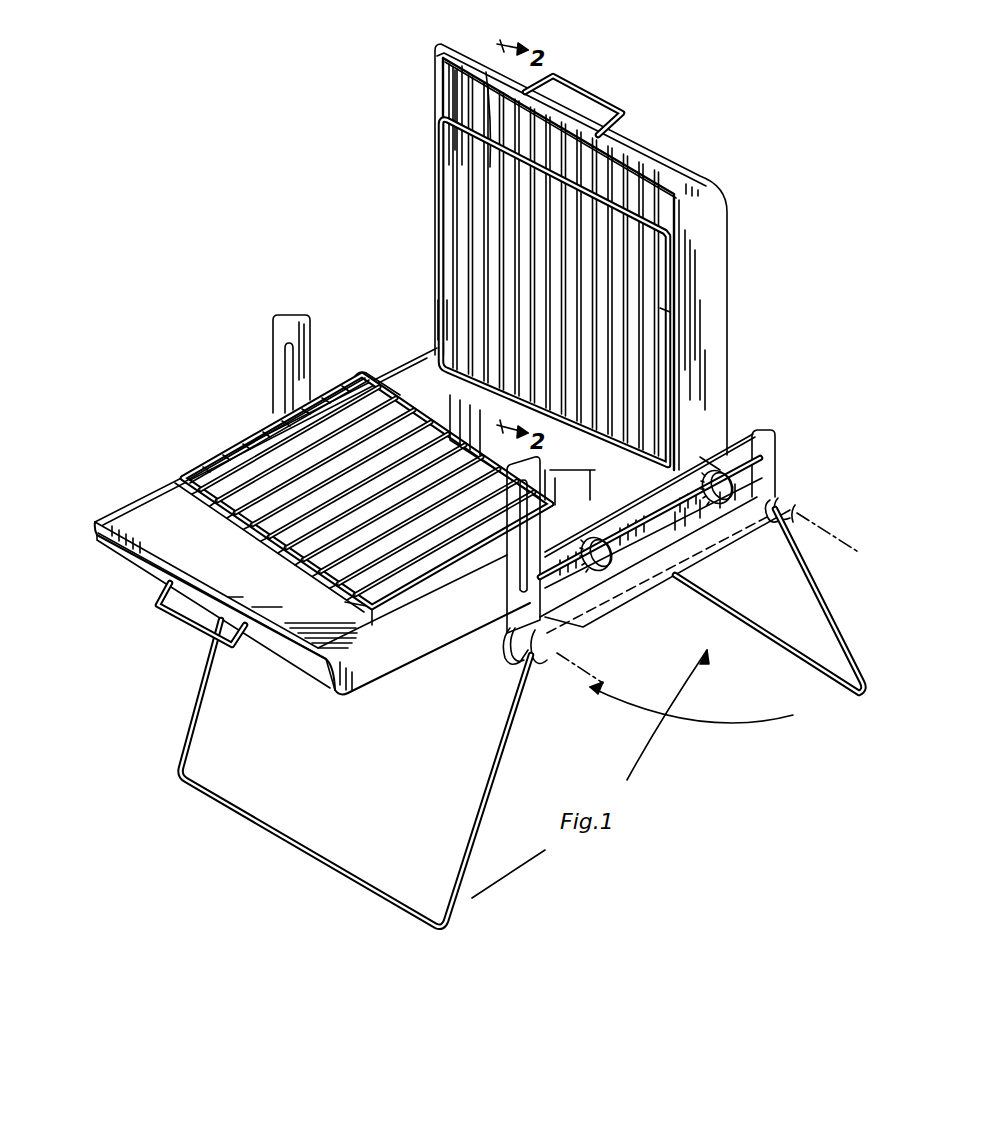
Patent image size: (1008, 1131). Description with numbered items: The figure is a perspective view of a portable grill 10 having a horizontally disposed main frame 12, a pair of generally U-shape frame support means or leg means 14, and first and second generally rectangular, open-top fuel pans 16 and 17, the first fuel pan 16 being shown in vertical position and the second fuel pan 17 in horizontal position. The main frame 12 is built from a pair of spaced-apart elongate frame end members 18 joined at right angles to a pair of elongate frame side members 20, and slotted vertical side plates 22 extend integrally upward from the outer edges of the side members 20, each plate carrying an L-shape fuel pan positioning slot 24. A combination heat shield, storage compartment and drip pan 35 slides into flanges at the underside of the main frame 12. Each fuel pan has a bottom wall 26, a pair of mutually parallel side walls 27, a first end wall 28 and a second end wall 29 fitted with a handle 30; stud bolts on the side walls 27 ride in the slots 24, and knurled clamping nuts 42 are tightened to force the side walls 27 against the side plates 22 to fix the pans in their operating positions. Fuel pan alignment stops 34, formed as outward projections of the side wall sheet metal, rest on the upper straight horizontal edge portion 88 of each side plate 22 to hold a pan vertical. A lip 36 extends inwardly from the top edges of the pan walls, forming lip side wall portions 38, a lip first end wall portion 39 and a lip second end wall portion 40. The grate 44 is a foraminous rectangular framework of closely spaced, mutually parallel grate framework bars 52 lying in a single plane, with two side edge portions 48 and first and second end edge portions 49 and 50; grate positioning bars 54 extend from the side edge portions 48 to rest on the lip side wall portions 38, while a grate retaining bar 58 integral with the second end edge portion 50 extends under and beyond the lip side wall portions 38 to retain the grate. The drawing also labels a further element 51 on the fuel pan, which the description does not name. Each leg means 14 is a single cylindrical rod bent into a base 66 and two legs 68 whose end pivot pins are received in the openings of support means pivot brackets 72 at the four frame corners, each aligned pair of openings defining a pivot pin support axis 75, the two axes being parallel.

The portable grill 10 is at (262, 282).
The main frame 12 is at (781, 464).
The frame support means or leg means 14 is at (502, 718).
The first fuel pan 16 is at (448, 340).
The second fuel pan 17 is at (270, 532).
The frame end members 18 is at (477, 642).
The frame side members 20 is at (700, 533).
The slotted vertical side plates 22 is at (524, 472).
The L-shape fuel pan positioning slot 24 is at (288, 368).
The bottom wall 26 is at (680, 165).
The side walls 27 is at (190, 540).
The first end wall 28 is at (463, 437).
The second end wall 29 is at (137, 568).
The handle 30 is at (590, 105).
The fuel pan alignment stops 34 is at (700, 455).
The combination heat shield pan, storage compartment pan and drip pan 35 is at (700, 550).
The lip 36 is at (357, 373).
The lip side wall portions 38 is at (357, 620).
The lip first end wall portion 39 is at (400, 365).
The lip second end wall portion 40 is at (313, 660).
The clamping nuts 42 is at (603, 557).
The grate 44 is at (666, 312).
The side edge portions 48 is at (363, 467).
The first end edge portion 49 is at (448, 310).
The second end edge portion 50 is at (570, 266).
The flange 51 is at (468, 85).
The grate framework bars 52 is at (655, 276).
The grate positioning bars 54 is at (240, 438).
The grate retaining bar 58 is at (560, 167).
The base 66 is at (292, 840).
The legs 68 is at (180, 758).
The support means pivot bracket 72 is at (538, 660).
The pivot pin support axis 75 is at (600, 683).
The upper straight horizontal edge portion 88 is at (767, 433).